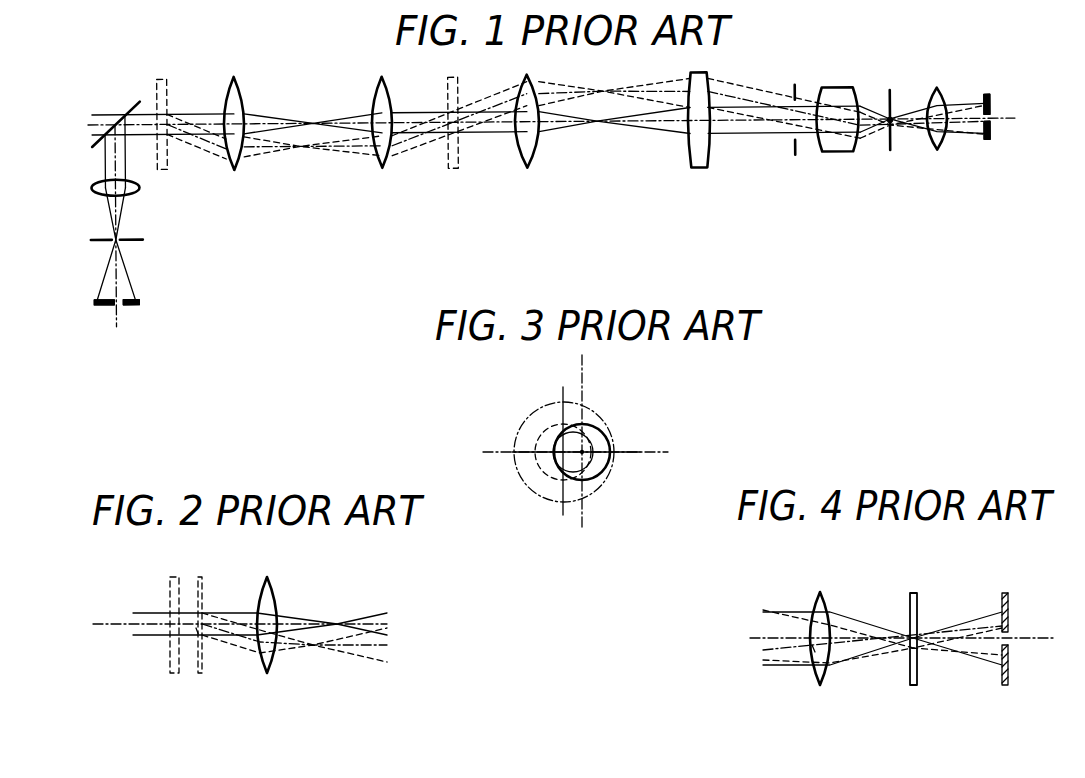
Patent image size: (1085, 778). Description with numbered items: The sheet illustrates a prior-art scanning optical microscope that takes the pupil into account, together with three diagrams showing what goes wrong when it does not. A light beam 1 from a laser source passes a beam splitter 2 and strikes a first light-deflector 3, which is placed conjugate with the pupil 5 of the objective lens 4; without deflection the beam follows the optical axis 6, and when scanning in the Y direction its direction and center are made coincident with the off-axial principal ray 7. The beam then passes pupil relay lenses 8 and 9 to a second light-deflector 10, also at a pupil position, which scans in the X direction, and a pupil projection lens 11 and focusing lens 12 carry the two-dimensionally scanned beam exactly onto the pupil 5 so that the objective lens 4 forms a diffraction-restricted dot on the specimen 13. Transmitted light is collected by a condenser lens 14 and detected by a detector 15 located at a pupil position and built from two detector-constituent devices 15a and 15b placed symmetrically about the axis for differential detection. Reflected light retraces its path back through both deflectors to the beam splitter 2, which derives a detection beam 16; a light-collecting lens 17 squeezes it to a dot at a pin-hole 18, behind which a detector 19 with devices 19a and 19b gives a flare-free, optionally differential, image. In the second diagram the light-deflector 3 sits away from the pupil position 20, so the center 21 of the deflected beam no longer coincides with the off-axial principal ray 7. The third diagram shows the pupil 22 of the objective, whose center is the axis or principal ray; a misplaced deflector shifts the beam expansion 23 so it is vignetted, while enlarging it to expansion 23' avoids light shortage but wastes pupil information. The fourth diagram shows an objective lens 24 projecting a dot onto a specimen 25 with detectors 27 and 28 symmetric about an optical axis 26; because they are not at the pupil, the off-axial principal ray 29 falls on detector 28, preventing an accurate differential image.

In FIG. 1, the light beam 1 is at (98, 112).
In FIG. 2, the light beam 1 is at (150, 612).
In FIG. 1, the beam splitter 2 is at (127, 101).
In FIG. 1, the first light-deflector 3 is at (159, 80).
In FIG. 2, the first light-deflector 3 is at (173, 577).
In FIG. 1, the objective lens 4 is at (836, 157).
In FIG. 1, the pupil 5 is at (795, 160).
In FIG. 1, the optical axis 6 is at (207, 118).
In FIG. 2, the optical axis 6 is at (118, 623).
In FIG. 1, the off-axial principal ray 7 is at (228, 145).
In FIG. 2, the off-axial principal ray 7 is at (252, 642).
In FIG. 1, the pupil relay lens 8 is at (235, 171).
In FIG. 2, the pupil relay lens 8 is at (269, 673).
In FIG. 1, the pupil relay lens 9 is at (380, 170).
In FIG. 1, the second light-deflector 10 is at (450, 171).
In FIG. 1, the pupil projection lens 11 is at (525, 171).
In FIG. 1, the focusing lens 12 is at (692, 172).
In FIG. 1, the specimen 13 is at (890, 156).
In FIG. 1, the condenser lens 14 is at (937, 156).
In FIG. 1, the detector 15 is at (987, 146).
In FIG. 1, the detector-constituent device 15a is at (990, 133).
In FIG. 1, the detector-constituent device 15b is at (990, 110).
In FIG. 1, the detection beam 16 is at (126, 160).
In FIG. 1, the light-collecting lens 17 is at (136, 192).
In FIG. 1, the pin-hole 18 is at (143, 241).
In FIG. 1, the detector 19 is at (139, 302).
In FIG. 1, the detector-constituent device 19a is at (128, 305).
In FIG. 1, the detector-constituent device 19b is at (98, 305).
In FIG. 2, the position of pupil 20 is at (202, 578).
In FIG. 2, the center of deflected light beam 21 is at (197, 630).
In FIG. 3, the center of deflected light beam 21 is at (556, 462).
In FIG. 3, the pupil of objective lens 22 is at (612, 438).
In FIG. 3, the expansion of light beam 23 is at (535, 440).
In FIG. 3, the expansion of light beam 23' is at (545, 452).
In FIG. 4, the objective lens 24 is at (820, 592).
In FIG. 4, the specimen 25 is at (910, 593).
In FIG. 4, the optical axis 26 is at (952, 637).
In FIG. 4, the detector 27 is at (1008, 598).
In FIG. 4, the detector 28 is at (1010, 678).
In FIG. 4, the off-axial principal ray 29 is at (812, 648).